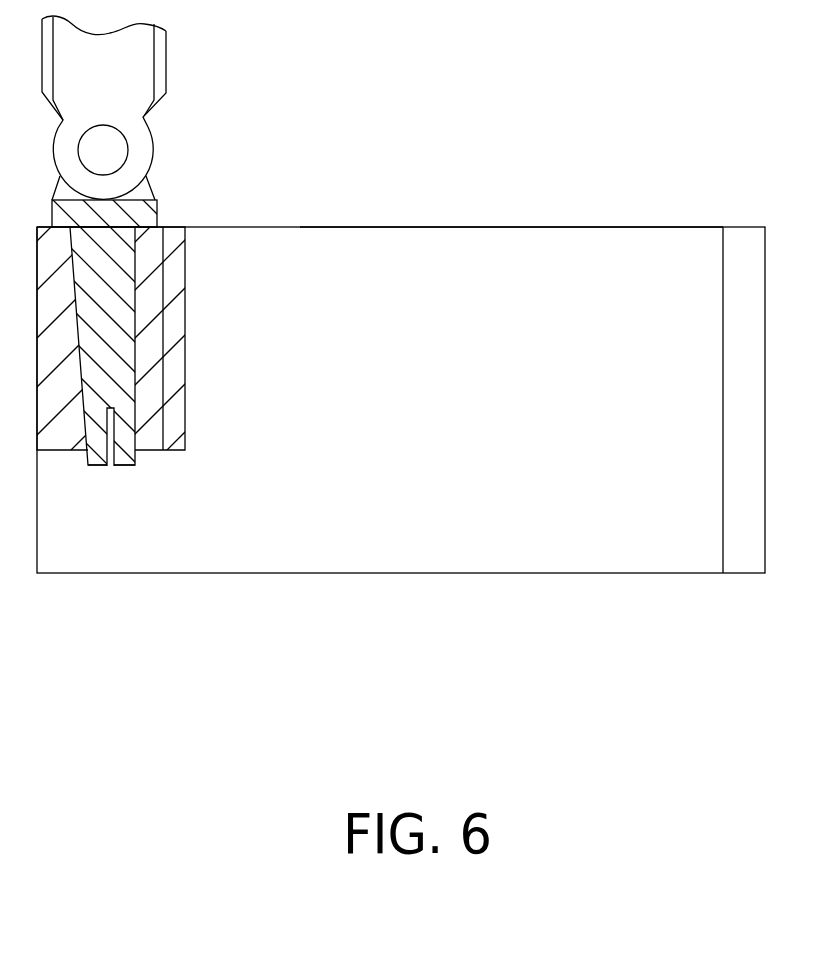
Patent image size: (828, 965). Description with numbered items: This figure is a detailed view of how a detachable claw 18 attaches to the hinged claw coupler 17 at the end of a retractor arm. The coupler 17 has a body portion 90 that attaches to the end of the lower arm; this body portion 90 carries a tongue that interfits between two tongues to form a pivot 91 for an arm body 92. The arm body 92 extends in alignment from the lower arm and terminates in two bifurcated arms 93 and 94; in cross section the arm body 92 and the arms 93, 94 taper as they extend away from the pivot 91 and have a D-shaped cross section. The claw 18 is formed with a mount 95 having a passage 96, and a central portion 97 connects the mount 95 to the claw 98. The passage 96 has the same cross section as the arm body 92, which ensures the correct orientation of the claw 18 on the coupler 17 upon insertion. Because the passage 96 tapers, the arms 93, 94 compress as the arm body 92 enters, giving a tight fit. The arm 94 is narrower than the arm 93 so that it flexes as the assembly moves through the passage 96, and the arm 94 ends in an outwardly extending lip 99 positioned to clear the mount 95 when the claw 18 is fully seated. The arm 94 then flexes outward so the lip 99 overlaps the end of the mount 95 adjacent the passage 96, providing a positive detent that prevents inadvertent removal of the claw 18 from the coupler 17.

The hinged claw coupler 17 is at (137, 62).
The claw 18 is at (487, 542).
The body portion 90 is at (140, 135).
The pivot 91 is at (113, 150).
The arm body 92 is at (145, 210).
The bifurcated arm 93 is at (90, 466).
The bifurcated arm 94 is at (130, 466).
The mount 95 is at (188, 342).
The passage 96 is at (152, 305).
The central portion 97 is at (492, 240).
The claw 98 is at (738, 238).
The lip 99 is at (110, 466).